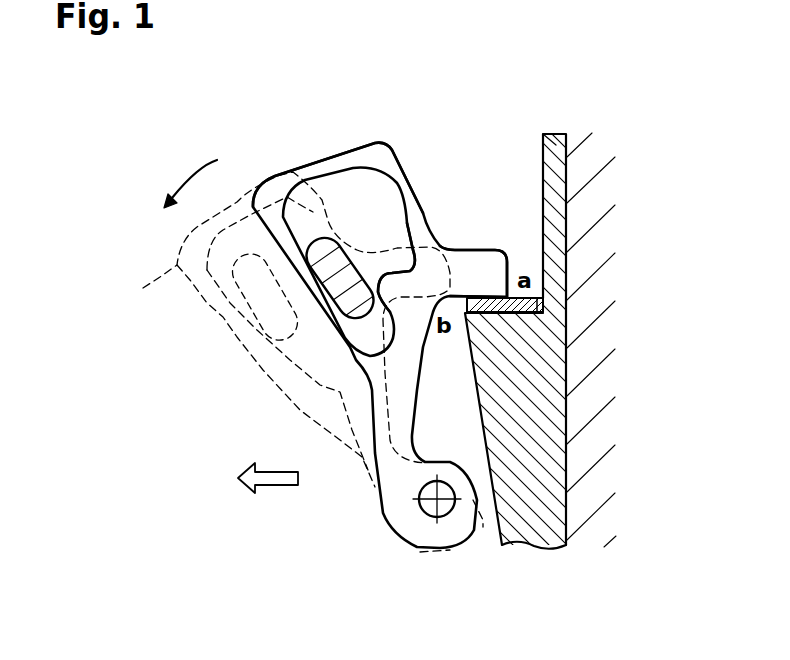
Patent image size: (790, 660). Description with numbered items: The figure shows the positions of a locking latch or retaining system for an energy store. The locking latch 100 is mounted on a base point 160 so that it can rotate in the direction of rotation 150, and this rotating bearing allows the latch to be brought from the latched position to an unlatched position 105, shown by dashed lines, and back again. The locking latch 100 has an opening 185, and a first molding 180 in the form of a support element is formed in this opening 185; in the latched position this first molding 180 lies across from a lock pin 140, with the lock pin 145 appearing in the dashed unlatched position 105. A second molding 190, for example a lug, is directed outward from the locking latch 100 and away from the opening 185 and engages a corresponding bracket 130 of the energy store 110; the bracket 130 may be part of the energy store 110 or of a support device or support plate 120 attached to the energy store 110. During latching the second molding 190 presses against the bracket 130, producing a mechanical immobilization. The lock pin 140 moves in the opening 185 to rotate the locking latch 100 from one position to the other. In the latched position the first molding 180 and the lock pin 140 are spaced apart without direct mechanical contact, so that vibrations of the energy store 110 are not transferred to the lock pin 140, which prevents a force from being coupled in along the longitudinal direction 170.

The locking latch 100 is at (365, 349).
The unlatched position 105 is at (143, 288).
The energy store 110 is at (595, 198).
The support plate 120 is at (533, 443).
The bracket 130 is at (567, 298).
The lock pin 140 is at (332, 272).
The lock pin 145 is at (228, 320).
The direction of rotation 150 is at (187, 172).
The base point 160 is at (437, 499).
The longitudinal direction 170 is at (278, 486).
The first molding 180 is at (412, 272).
The opening 185 is at (323, 190).
The second molding 190 is at (487, 270).